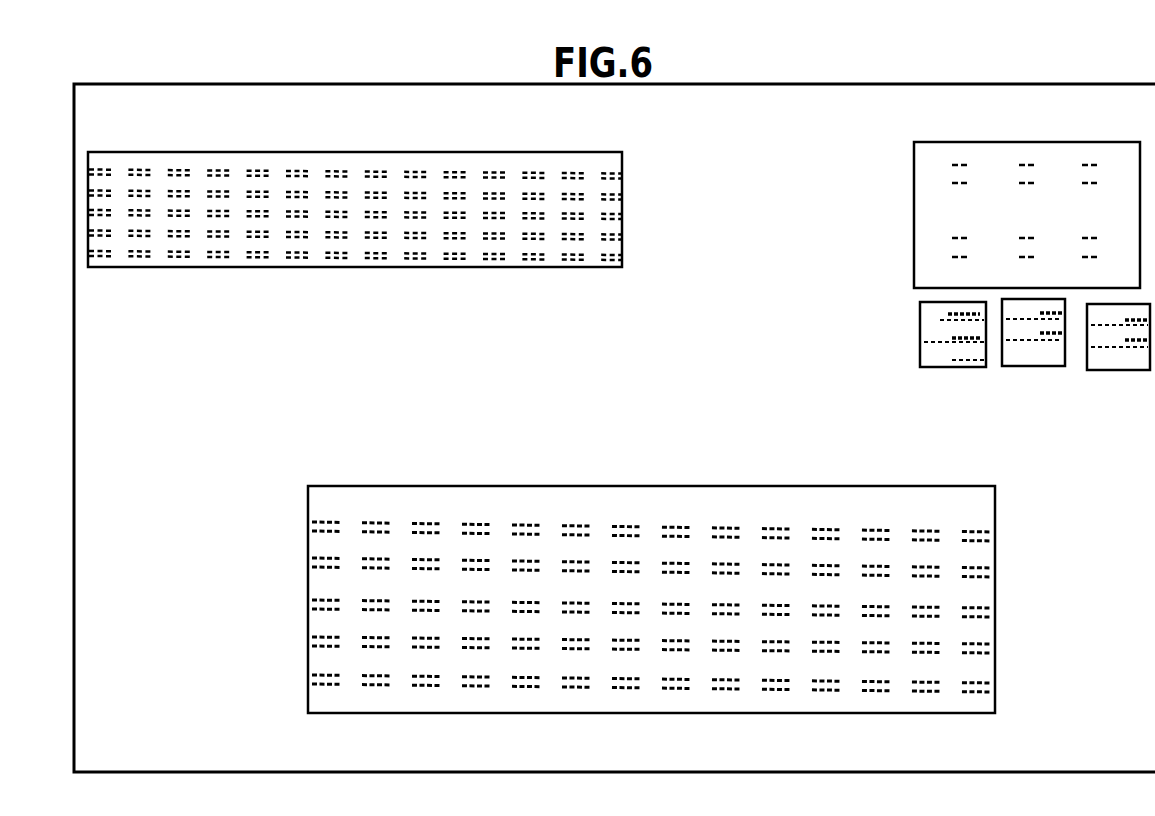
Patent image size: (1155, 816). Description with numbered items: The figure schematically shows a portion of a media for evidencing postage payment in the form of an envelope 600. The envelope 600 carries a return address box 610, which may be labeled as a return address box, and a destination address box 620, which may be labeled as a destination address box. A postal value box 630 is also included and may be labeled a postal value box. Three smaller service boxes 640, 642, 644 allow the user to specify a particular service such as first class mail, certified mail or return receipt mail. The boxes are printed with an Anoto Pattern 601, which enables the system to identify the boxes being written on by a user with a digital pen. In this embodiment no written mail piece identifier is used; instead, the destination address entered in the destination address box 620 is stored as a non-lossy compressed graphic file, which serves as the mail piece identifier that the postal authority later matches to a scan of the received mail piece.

The envelope 600 is at (900, 61).
The Anoto Pattern 601 is at (110, 250).
The return address box 610 is at (175, 151).
The destination address box 620 is at (395, 481).
The postal value box 630 is at (1048, 134).
The service box 640 is at (953, 349).
The service box 642 is at (1033, 350).
The service box 644 is at (1118, 355).